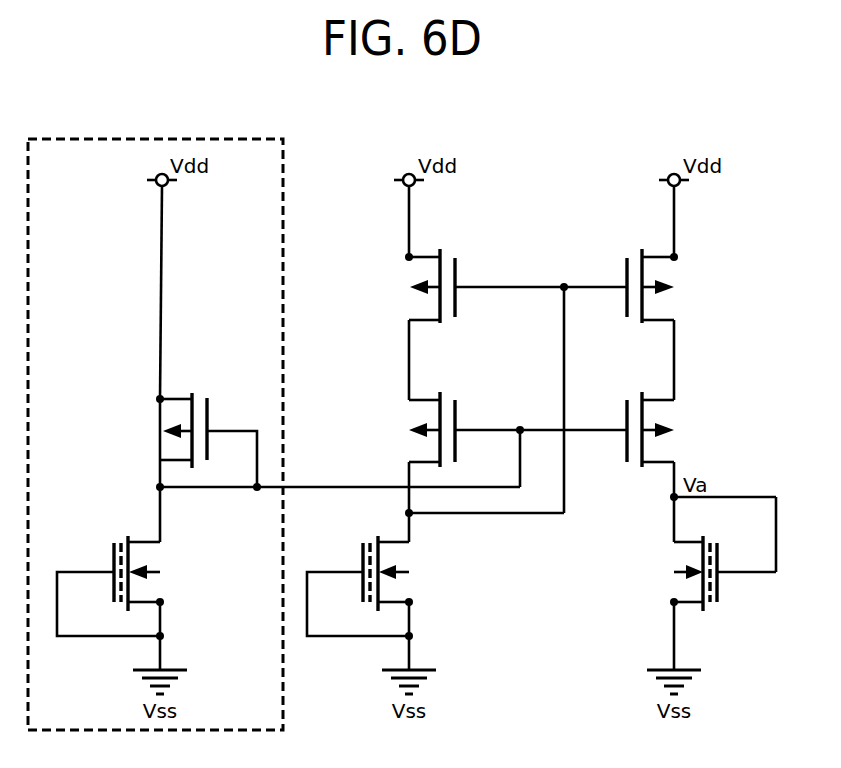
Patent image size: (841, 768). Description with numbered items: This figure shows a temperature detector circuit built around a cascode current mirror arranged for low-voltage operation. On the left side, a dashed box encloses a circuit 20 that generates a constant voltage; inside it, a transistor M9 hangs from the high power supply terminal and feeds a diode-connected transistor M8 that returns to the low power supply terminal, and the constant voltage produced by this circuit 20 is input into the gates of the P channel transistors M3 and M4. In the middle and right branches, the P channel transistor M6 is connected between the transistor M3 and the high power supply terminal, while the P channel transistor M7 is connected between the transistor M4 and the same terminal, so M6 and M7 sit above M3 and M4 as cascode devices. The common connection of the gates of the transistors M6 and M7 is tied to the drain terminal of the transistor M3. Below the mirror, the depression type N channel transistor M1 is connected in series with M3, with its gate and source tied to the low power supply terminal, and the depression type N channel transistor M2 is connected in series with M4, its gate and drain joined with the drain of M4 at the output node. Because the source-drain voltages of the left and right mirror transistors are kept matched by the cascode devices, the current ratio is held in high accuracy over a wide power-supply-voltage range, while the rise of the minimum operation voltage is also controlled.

The circuit 20 is at (220, 139).
The depression type N channel transistor M1 is at (379, 586).
The depression type N channel transistor M2 is at (704, 573).
The P channel transistor M3 is at (499, 429).
The P channel transistor M4 is at (670, 429).
The P channel transistor M6 is at (499, 286).
The P channel transistor M7 is at (670, 286).
The transistor M8 is at (129, 586).
The transistor M9 is at (189, 440).